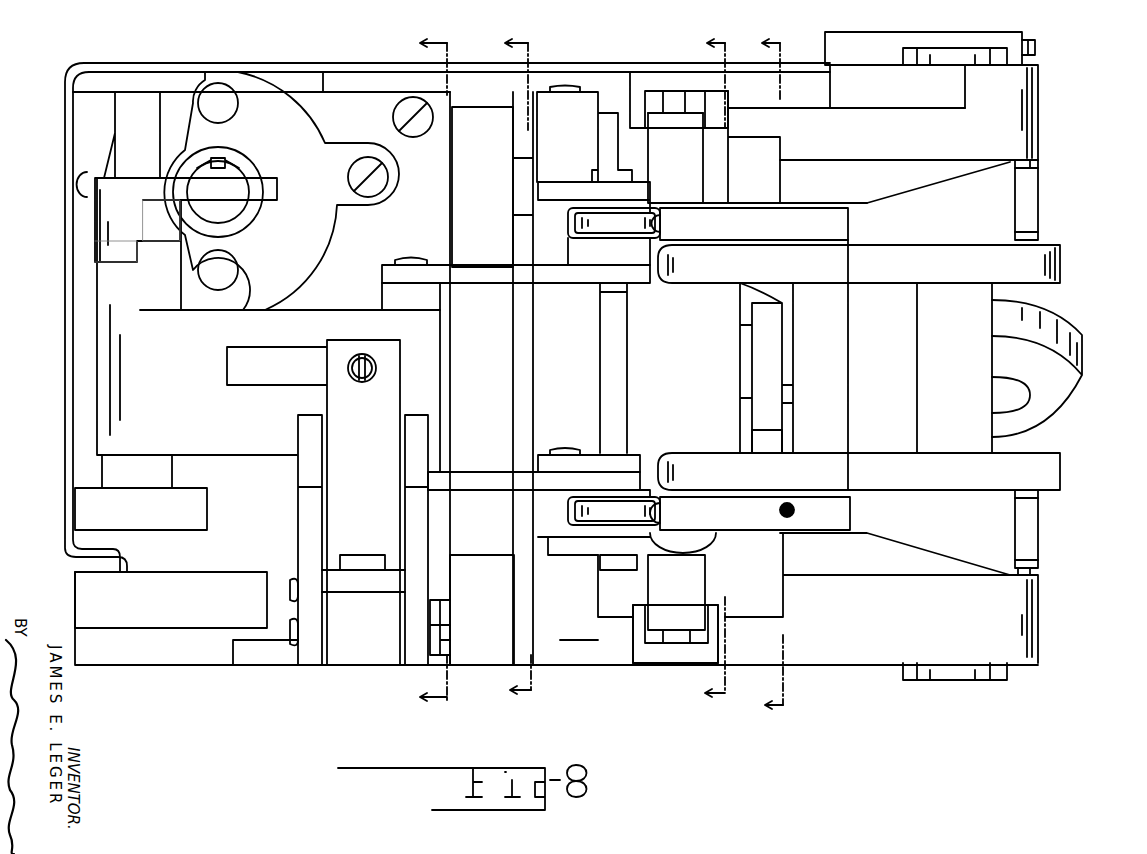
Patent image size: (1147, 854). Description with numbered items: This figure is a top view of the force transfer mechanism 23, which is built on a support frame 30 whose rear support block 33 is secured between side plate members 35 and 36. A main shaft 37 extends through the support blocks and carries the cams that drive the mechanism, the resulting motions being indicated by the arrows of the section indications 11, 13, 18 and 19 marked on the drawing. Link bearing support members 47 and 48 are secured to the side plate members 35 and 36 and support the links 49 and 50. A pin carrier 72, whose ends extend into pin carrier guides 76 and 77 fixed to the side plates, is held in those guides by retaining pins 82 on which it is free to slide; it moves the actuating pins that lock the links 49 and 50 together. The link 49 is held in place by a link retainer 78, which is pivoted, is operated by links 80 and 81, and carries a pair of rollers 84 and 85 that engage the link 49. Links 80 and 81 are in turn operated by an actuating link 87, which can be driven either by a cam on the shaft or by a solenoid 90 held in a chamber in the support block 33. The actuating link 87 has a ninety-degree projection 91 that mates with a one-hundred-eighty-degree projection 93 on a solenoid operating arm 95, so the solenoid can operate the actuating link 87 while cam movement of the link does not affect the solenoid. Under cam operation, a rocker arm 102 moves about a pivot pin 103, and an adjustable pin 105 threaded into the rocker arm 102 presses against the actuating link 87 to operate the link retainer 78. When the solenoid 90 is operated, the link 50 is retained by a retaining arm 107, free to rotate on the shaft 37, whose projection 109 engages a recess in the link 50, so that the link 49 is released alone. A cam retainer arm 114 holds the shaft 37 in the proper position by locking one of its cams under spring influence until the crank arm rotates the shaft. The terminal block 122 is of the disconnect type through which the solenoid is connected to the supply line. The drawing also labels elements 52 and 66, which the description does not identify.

The section line 11 is at (703, 368).
The section line 13 is at (422, 370).
The section line 18 is at (760, 374).
The section line 19 is at (506, 366).
The force transfer mechanism 23 is at (1040, 120).
The support frame 30 is at (594, 672).
The rear support block 33 is at (130, 665).
The side plate member 35 is at (1036, 90).
The side plate member 36 is at (1040, 620).
The main shaft 37 is at (1085, 330).
The link bearing support member 47 is at (1040, 215).
The link bearing support member 48 is at (1040, 525).
The link 49 is at (1062, 258).
The link 50 is at (700, 283).
The slide bar 52 is at (690, 445).
The support block 66 is at (948, 440).
The pin carrier 72 is at (700, 145).
The pin carrier guide 76 is at (660, 78).
The pin carrier guide 77 is at (660, 665).
The link retainer 78 is at (605, 267).
The link 80 is at (478, 470).
The link 81 is at (500, 285).
The retaining pin 82 is at (690, 100).
The roller 84 is at (660, 218).
The roller 85 is at (660, 510).
The actuating link 87 is at (350, 312).
The solenoid 90 is at (218, 80).
The ninety-degree projection 91 is at (157, 247).
The one-hundred-eighty-degree projection 93 is at (95, 257).
The solenoid operating arm 95 is at (95, 187).
The rocker arm 102 is at (400, 365).
The pivot pin 103 is at (283, 648).
The adjustable pin 105 is at (362, 382).
The retaining arm 107 is at (770, 345).
The projection 109 is at (765, 437).
The cam retainer arm 114 is at (500, 143).
The terminal block 122 is at (860, 75).